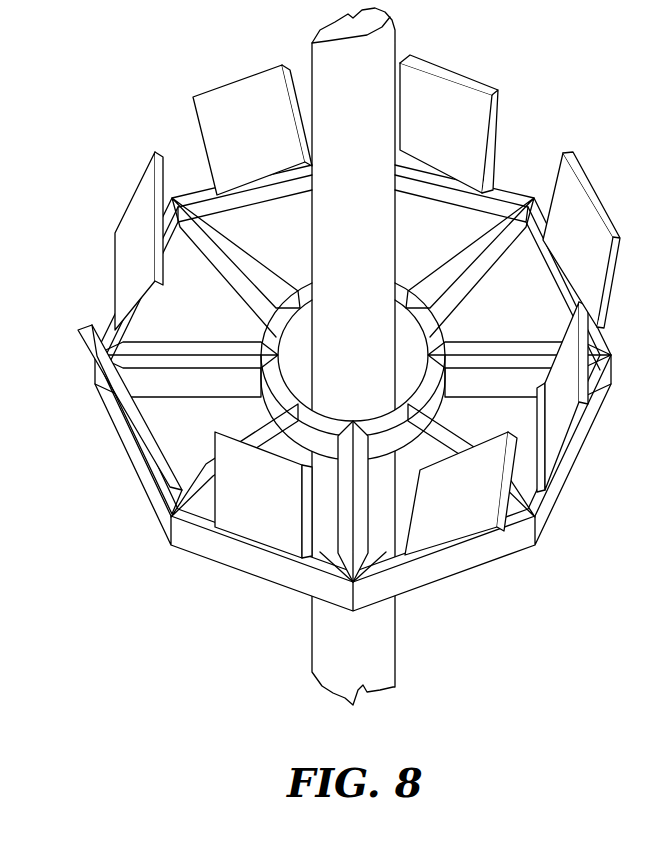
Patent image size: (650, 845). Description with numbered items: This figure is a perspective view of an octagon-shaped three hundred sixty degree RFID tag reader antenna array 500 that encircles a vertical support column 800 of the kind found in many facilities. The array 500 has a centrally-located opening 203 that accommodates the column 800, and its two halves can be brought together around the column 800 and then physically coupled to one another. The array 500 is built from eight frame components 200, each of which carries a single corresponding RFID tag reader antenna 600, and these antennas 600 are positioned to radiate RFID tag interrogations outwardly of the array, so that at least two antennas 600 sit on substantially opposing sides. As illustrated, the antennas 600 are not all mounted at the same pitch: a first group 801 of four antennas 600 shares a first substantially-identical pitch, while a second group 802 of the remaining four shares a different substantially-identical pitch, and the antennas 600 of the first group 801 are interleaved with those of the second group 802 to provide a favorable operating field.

The frame component 200 is at (283, 571).
The centrally-located opening 203 is at (400, 345).
The 360 degree RFID tag reader antenna array 500 is at (515, 543).
The RFID tag reader antenna 600 is at (174, 547).
The vertical support column 800 is at (383, 47).
The first group 801 is at (113, 252).
The second group 802 is at (238, 97).